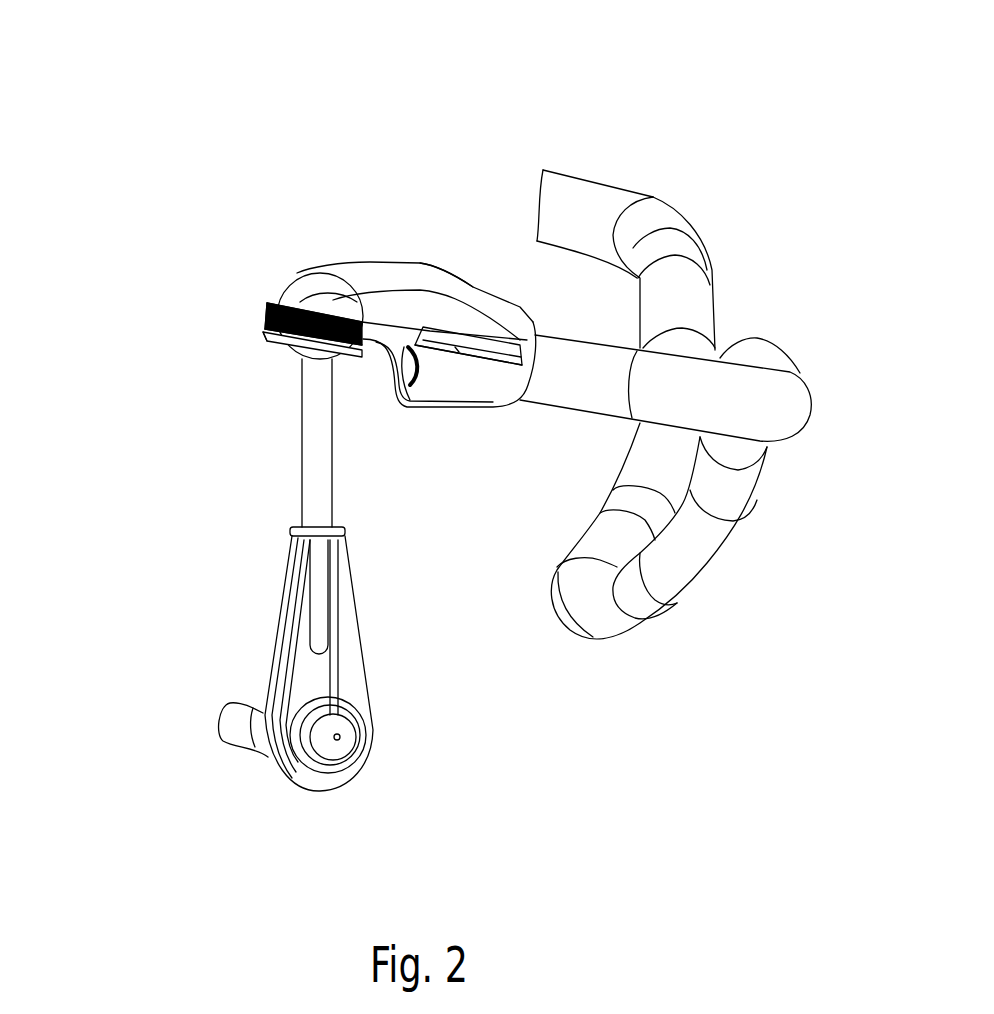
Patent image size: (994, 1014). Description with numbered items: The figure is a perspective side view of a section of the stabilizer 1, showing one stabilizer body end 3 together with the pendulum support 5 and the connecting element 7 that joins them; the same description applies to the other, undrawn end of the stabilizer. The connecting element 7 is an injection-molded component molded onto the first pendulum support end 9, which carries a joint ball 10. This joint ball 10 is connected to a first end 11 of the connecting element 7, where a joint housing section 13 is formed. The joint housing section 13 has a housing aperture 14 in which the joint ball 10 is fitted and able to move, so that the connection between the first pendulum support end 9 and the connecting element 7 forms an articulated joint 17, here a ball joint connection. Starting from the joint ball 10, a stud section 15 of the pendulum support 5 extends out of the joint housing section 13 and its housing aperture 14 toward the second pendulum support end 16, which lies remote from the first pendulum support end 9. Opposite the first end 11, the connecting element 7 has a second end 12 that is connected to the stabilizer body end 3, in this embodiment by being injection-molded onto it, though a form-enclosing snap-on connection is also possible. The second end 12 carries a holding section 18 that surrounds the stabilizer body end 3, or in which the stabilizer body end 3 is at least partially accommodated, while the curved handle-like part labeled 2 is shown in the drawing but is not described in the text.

The stabilizer 1 is at (724, 112).
The handle 2 is at (726, 288).
The stabilizer body end 3 is at (535, 425).
The pendulum support 5 is at (202, 570).
The connecting element 7 is at (403, 246).
The first pendulum support end 9 is at (252, 383).
The joint ball 10 is at (287, 345).
The first end 11 is at (250, 283).
The second end 12 is at (506, 280).
The joint housing section 13 is at (310, 291).
The housing aperture 14 is at (357, 376).
The stud section 15 is at (310, 463).
The second pendulum support end 16 is at (226, 797).
The articulated joint 17 is at (150, 314).
The holding section 18 is at (471, 426).